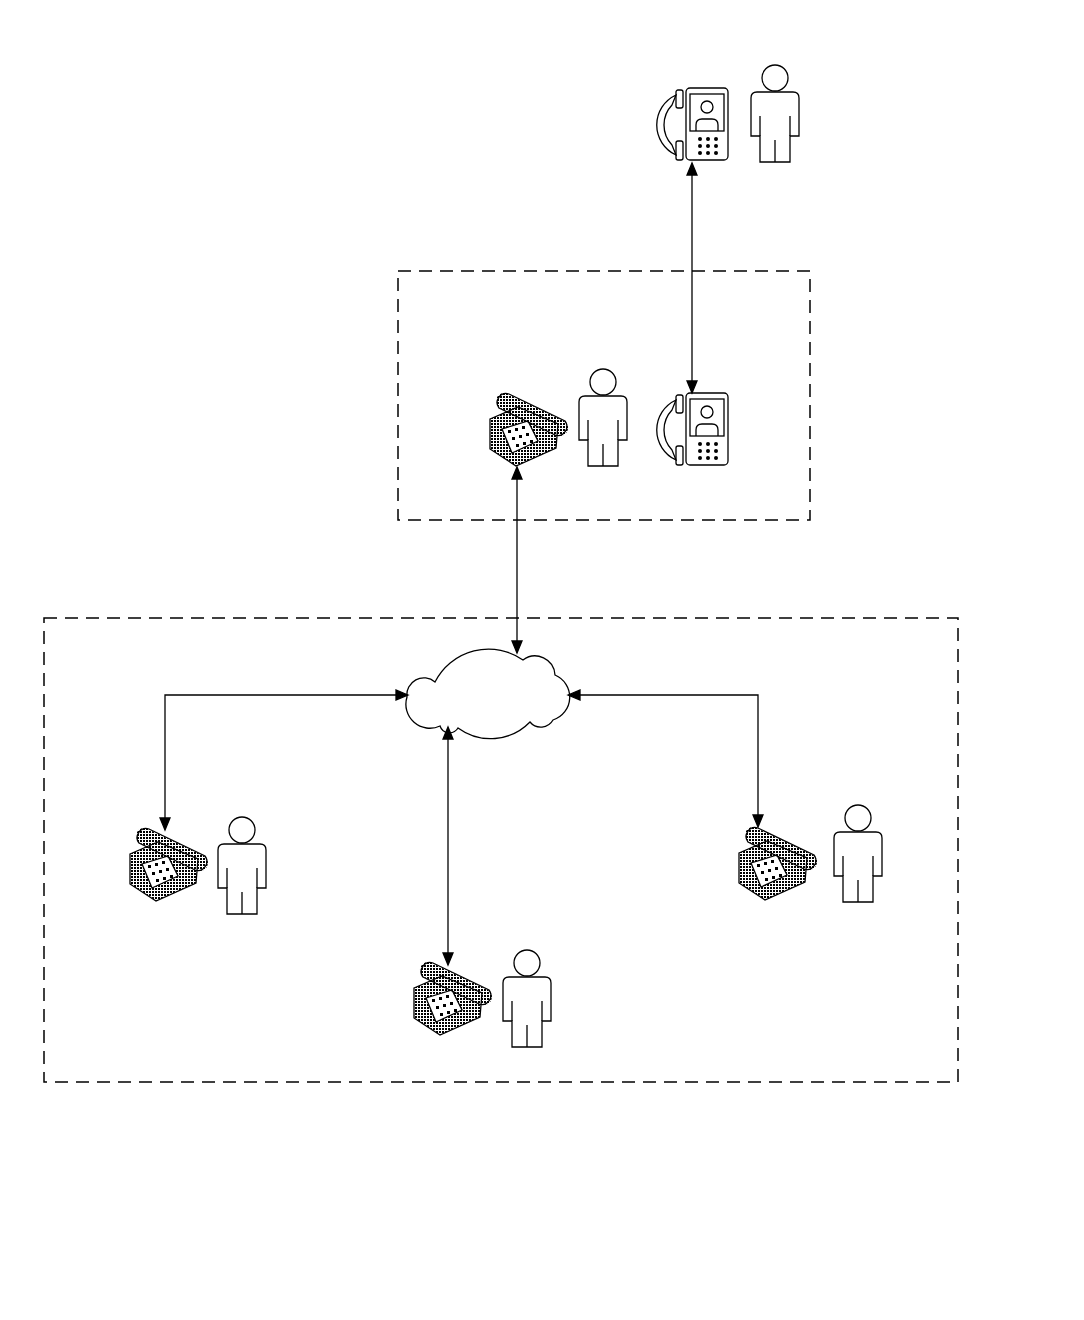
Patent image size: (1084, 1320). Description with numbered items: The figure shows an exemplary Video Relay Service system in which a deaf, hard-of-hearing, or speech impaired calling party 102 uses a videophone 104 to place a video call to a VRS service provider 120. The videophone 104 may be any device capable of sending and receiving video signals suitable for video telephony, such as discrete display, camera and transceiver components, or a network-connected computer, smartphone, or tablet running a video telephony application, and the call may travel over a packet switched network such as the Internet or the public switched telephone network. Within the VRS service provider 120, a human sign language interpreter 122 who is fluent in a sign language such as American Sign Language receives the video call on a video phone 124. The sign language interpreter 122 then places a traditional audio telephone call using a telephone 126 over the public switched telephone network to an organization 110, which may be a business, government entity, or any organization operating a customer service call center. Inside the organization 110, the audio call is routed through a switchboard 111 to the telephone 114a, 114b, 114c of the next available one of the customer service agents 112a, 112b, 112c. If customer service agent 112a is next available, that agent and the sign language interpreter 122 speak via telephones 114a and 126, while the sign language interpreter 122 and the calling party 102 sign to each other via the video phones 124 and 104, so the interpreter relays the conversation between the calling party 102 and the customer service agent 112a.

The calling party 102 is at (802, 103).
The videophone 104 is at (712, 88).
The organization 110 is at (147, 619).
The switchboard 111 is at (468, 708).
The customer service agent 112a is at (265, 865).
The customer service agent 112b is at (548, 998).
The customer service agent 112c is at (884, 833).
The telephone 114a is at (133, 842).
The telephone 114b is at (418, 977).
The telephone 114c is at (737, 873).
The VRS service provider 120 is at (502, 270).
The sign language interpreter 122 is at (618, 382).
The video phone 124 is at (725, 430).
The telephone 126 is at (497, 408).